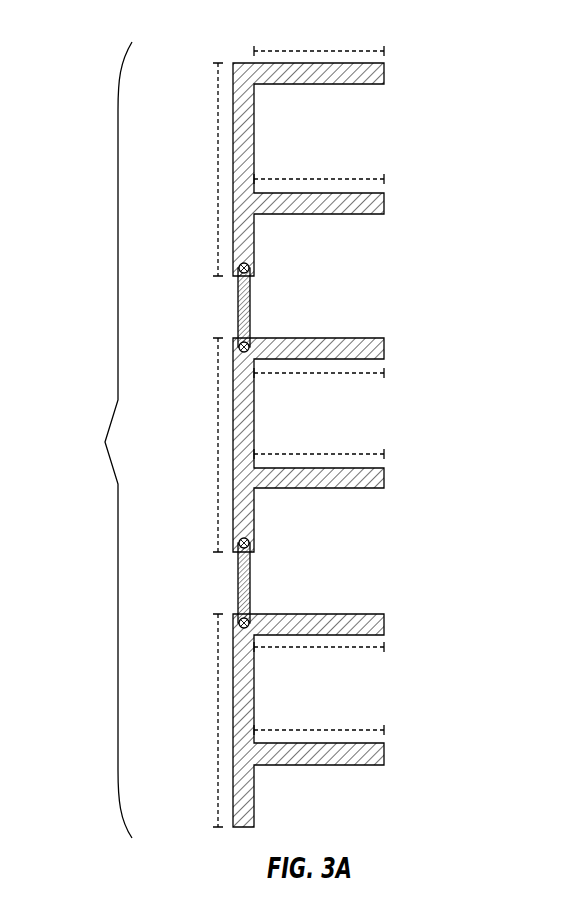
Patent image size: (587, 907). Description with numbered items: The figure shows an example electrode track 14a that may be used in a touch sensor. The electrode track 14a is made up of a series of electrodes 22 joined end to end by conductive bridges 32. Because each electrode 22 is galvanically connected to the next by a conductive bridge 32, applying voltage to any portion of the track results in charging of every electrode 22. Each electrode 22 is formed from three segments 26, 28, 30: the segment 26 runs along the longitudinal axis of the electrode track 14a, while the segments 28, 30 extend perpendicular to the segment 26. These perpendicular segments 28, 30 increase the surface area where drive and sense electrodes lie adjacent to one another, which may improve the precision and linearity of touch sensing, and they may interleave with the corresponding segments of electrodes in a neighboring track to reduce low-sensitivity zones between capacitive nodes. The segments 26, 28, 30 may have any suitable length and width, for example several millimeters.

The electrode track 14a is at (97, 440).
The electrode 22 is at (399, 125).
The segment 26 is at (218, 168).
The segment 28 is at (318, 179).
The segment 30 is at (316, 51).
The conductive bridge 32 is at (250, 310).